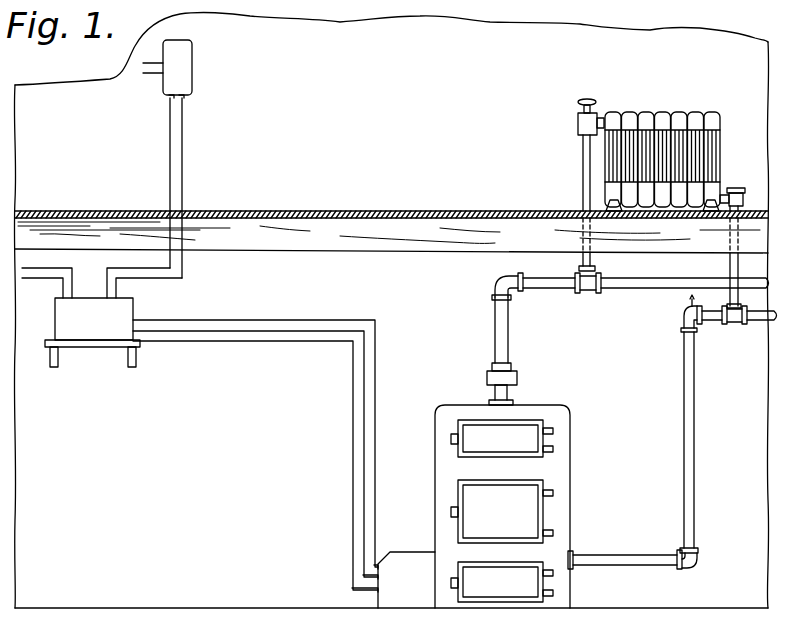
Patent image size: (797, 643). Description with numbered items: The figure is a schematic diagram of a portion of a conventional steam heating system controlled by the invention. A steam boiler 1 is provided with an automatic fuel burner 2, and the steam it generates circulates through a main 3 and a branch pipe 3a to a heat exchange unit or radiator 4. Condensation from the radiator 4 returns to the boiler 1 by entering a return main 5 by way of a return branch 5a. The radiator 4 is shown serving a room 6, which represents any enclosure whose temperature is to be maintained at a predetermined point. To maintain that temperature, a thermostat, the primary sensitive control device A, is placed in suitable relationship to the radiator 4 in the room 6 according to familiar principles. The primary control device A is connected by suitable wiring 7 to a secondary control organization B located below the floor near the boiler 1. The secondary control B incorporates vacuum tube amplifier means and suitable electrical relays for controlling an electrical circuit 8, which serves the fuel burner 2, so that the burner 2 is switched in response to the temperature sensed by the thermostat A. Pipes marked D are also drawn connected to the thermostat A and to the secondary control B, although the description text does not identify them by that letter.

The steam boiler 1 is at (560, 470).
The automatic fuel burner 2 is at (406, 580).
The main 3 is at (510, 352).
The branch pipe 3a is at (583, 165).
The radiator 4 is at (718, 162).
The return main 5 is at (686, 380).
The return branch 5a is at (730, 268).
The room 6 is at (391, 310).
The wiring 7 is at (172, 183).
The electrical circuit 8 is at (350, 438).
The primary sensitive control device A is at (186, 73).
The secondary control organization B is at (120, 318).
The pipes D is at (153, 75).